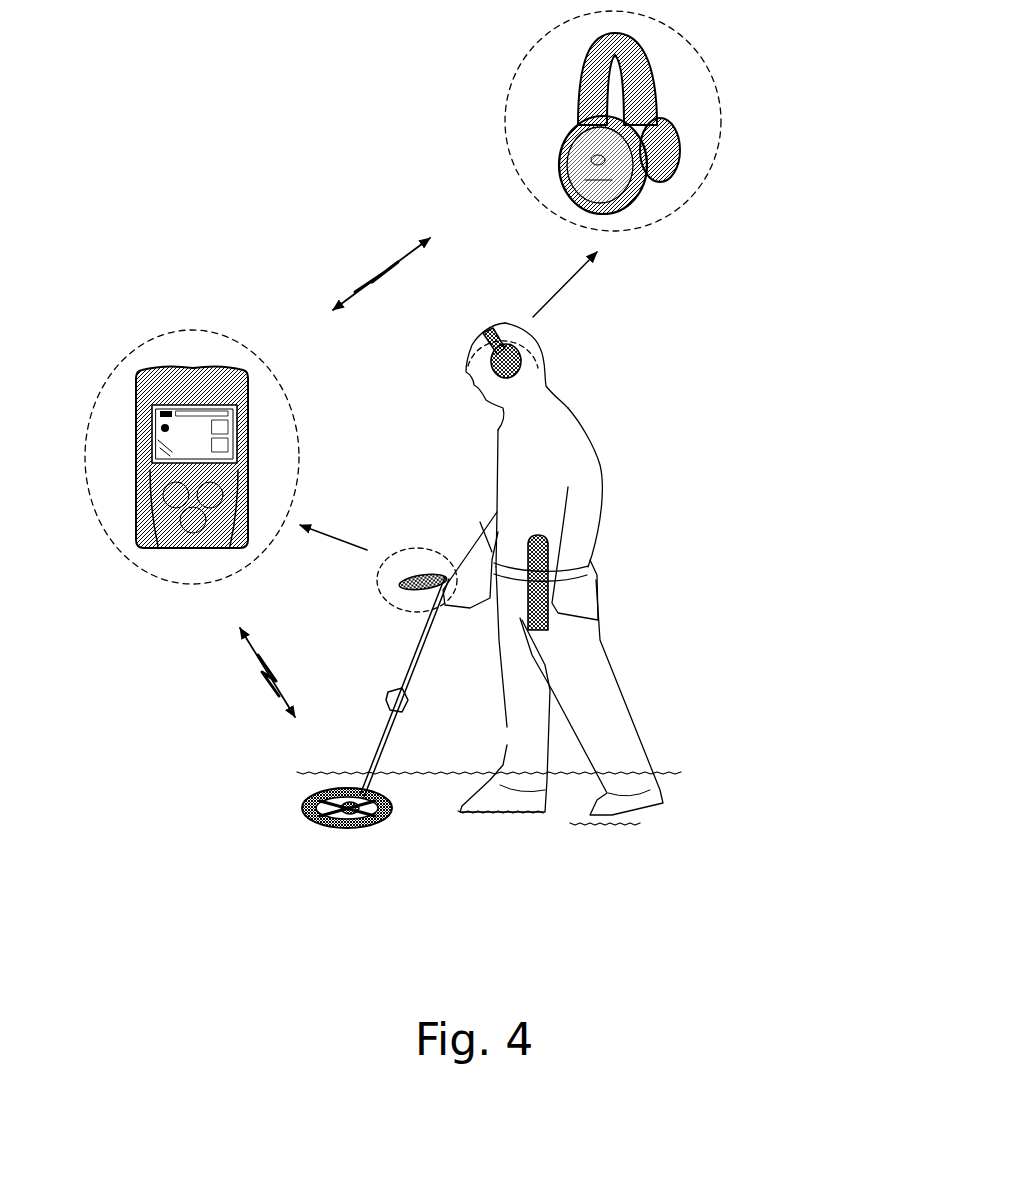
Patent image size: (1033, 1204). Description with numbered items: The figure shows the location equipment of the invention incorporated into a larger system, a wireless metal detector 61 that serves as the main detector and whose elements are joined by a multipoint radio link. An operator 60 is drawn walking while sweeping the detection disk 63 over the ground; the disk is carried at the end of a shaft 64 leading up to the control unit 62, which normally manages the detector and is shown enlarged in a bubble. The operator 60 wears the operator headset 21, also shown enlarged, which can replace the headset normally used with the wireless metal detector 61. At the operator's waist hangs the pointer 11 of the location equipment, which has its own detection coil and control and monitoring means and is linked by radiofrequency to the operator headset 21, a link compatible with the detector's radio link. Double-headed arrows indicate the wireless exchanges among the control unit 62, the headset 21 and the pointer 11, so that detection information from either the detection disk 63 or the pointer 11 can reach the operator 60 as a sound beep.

The pointer 11 is at (560, 622).
The operator headset 21 is at (668, 196).
The operator 60 is at (583, 495).
The wireless metal detector 61 is at (415, 785).
The control unit 62 is at (185, 378).
The detection disk 63 is at (335, 825).
The shaft 64 is at (383, 747).